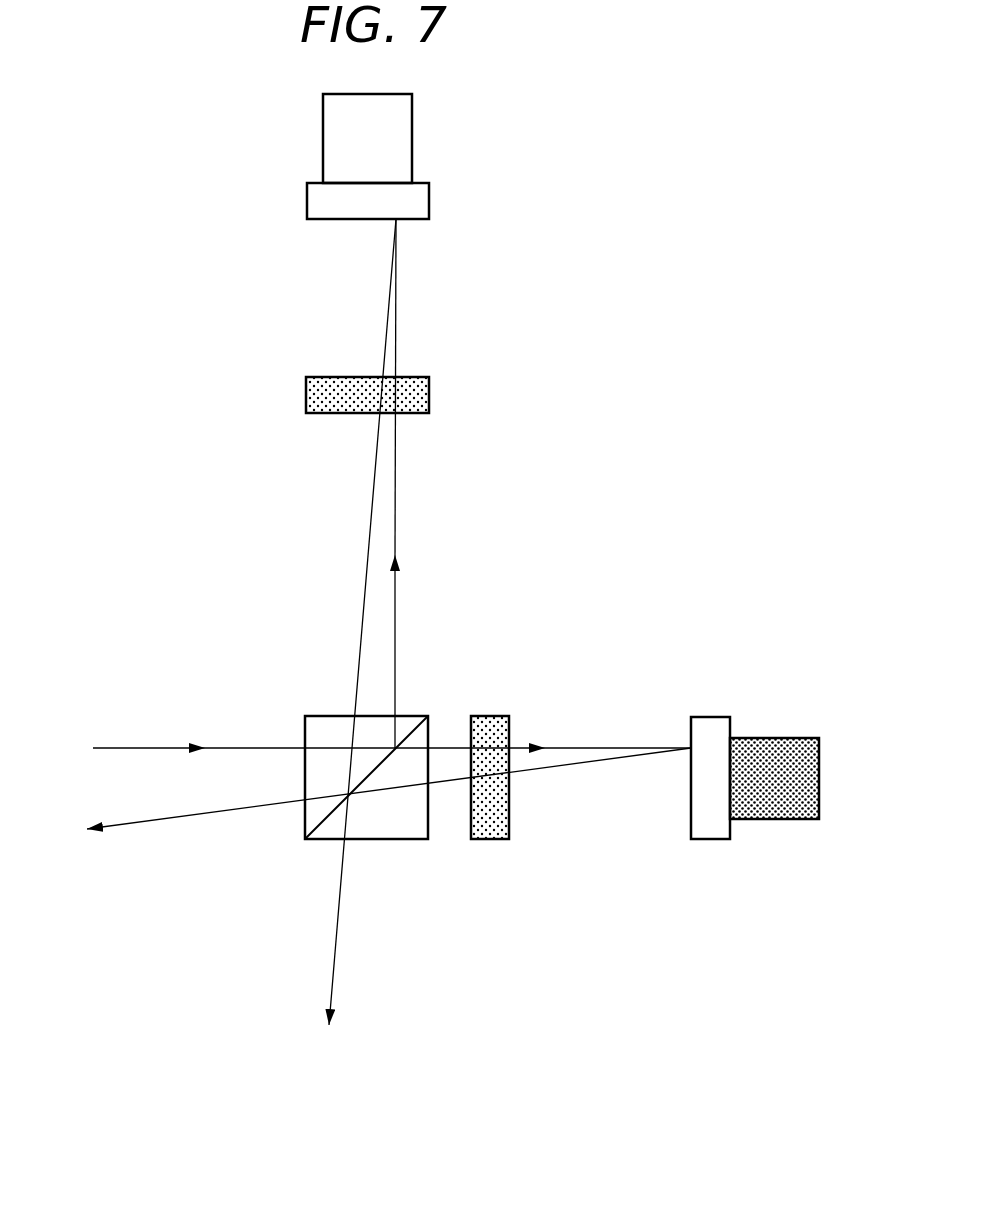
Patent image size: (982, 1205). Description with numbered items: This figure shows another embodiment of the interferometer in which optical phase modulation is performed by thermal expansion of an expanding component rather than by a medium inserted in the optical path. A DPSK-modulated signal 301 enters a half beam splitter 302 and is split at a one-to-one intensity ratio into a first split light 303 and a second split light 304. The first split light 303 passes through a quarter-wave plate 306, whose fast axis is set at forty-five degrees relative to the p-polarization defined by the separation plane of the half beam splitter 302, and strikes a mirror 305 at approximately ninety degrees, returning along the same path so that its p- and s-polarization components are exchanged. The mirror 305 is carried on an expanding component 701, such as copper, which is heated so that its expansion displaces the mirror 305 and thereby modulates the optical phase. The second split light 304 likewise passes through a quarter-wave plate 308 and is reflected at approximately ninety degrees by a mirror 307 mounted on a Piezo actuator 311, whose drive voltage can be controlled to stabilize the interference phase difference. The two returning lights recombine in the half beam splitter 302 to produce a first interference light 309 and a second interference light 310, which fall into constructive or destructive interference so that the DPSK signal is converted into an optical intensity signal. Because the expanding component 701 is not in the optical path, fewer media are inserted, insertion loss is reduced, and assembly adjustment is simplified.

The expanding component 701 is at (412, 128).
The mirror 305 is at (429, 200).
The quarter-wave plate 306 is at (429, 392).
The first split light 303 is at (397, 490).
The modulated signal 301 is at (152, 748).
The half beam splitter 302 is at (311, 716).
The second split light 304 is at (447, 748).
The quarter-wave plate 308 is at (485, 839).
The mirror 307 is at (708, 839).
The Piezo actuator 311 is at (777, 819).
The first interference light 309 is at (183, 822).
The second interference light 310 is at (332, 973).